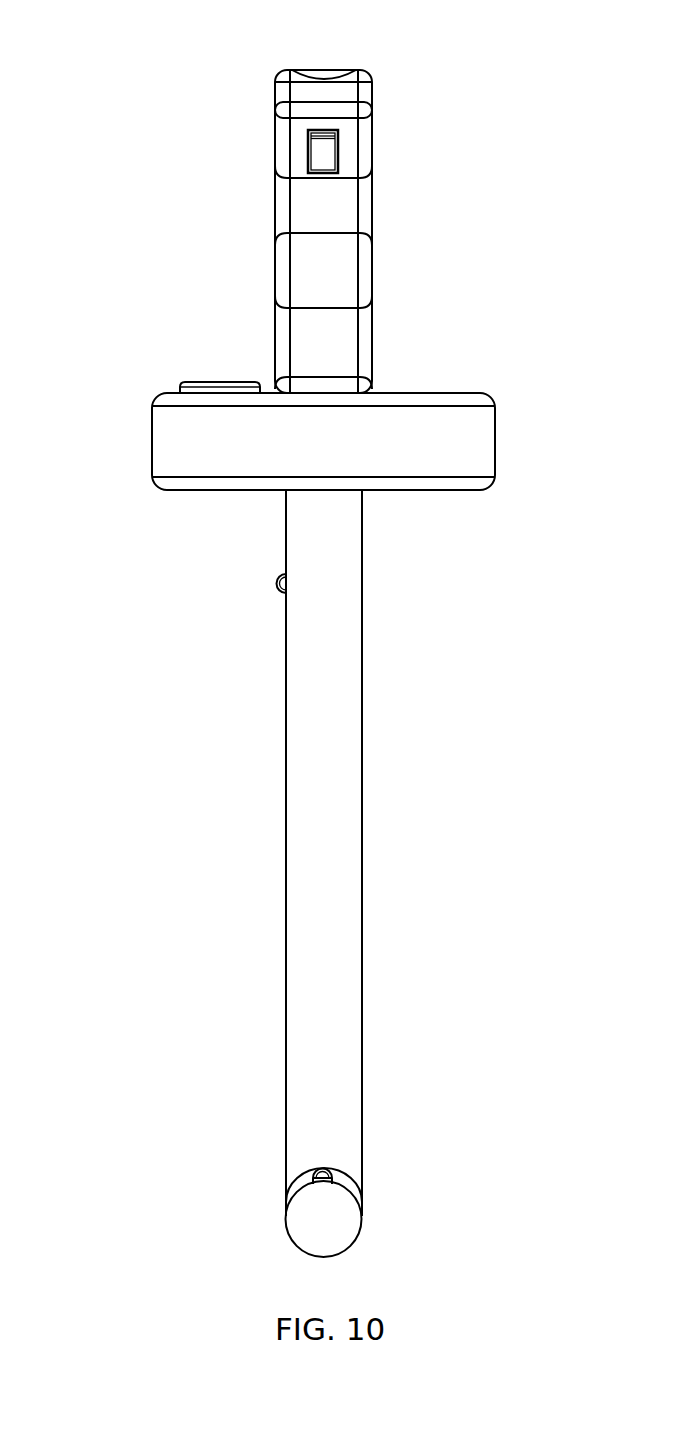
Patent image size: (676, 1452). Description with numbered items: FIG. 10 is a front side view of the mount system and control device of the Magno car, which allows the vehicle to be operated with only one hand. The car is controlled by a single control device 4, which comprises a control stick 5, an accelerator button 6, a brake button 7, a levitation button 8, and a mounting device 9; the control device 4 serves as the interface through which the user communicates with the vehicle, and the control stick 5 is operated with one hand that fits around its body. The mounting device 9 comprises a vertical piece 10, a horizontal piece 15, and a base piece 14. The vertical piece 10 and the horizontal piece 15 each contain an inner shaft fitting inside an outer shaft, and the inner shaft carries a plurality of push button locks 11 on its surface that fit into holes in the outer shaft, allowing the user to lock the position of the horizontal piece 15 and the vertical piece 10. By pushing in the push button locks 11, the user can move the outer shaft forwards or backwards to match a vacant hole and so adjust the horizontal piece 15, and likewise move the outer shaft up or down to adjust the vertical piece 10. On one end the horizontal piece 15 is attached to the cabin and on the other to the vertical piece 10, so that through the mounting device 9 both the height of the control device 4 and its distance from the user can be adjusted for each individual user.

The control device 4 is at (154, 245).
The control stick 5 is at (368, 240).
The accelerator button 6 is at (323, 150).
The brake button 7 is at (322, 70).
The levitation button 8 is at (213, 383).
The mounting device 9 is at (426, 852).
The vertical piece 10 is at (286, 783).
The push button locks 11 is at (283, 595).
The base piece 14 is at (203, 463).
The horizontal piece 15 is at (337, 1232).